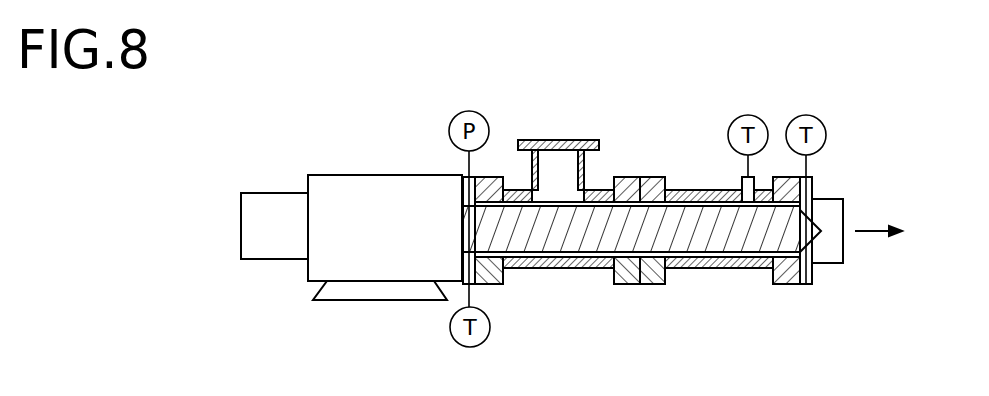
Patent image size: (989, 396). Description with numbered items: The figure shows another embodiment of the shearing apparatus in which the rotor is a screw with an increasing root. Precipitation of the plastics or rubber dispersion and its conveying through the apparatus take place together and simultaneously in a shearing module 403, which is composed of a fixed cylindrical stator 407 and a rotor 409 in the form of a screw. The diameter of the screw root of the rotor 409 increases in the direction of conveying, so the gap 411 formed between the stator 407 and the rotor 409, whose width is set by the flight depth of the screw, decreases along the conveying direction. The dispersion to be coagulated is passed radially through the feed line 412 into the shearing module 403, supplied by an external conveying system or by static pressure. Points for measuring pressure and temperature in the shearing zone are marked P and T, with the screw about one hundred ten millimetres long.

The shearing module 403 is at (700, 190).
The fixed cylindrical stator 407 is at (558, 268).
The rotor 409 is at (704, 243).
The gap 411 is at (747, 252).
The feed line 412 is at (559, 112).